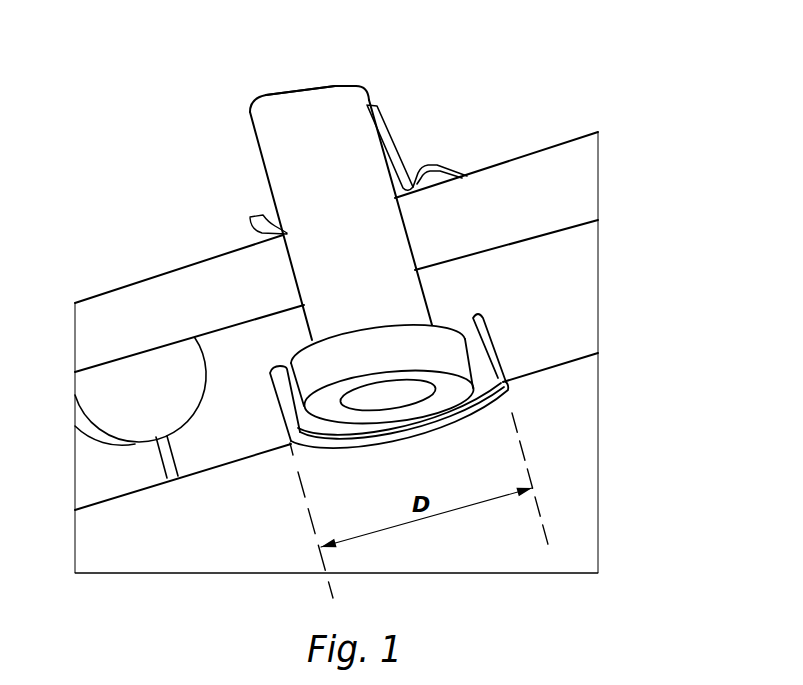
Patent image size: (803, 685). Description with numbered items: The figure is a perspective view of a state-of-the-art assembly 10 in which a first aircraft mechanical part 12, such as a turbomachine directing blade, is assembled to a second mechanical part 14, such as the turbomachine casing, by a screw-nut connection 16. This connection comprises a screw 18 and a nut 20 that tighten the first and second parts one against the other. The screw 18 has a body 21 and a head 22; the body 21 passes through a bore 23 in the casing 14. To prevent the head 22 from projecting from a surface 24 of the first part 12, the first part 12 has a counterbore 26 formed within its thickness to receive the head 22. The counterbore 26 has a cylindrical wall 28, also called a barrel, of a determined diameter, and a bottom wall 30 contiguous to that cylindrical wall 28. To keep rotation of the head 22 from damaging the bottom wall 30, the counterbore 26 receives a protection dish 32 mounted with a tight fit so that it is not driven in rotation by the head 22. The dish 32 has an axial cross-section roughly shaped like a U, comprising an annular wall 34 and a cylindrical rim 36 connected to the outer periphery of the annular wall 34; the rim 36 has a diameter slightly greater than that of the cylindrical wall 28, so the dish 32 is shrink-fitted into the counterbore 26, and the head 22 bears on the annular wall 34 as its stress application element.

The assembly 10 is at (613, 212).
The first aircraft mechanical part 12 is at (584, 313).
The second mechanical part 14 is at (567, 167).
The screw-nut connection 16 is at (372, 173).
The screw 18 is at (298, 121).
The nut 20 is at (385, 147).
The body 21 is at (283, 145).
The head 22 is at (453, 388).
The bore 23 is at (432, 323).
The surface 24 is at (160, 545).
The counterbore 26 is at (346, 354).
The cylindrical wall 28 is at (492, 354).
The bottom wall 30 is at (407, 238).
The protection dish 32 is at (280, 400).
The annular wall 34 is at (463, 320).
The cylindrical rim 36 is at (292, 415).